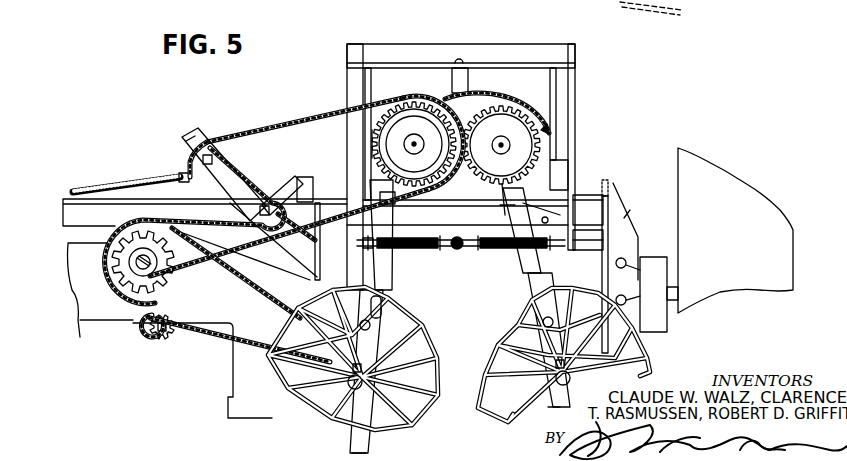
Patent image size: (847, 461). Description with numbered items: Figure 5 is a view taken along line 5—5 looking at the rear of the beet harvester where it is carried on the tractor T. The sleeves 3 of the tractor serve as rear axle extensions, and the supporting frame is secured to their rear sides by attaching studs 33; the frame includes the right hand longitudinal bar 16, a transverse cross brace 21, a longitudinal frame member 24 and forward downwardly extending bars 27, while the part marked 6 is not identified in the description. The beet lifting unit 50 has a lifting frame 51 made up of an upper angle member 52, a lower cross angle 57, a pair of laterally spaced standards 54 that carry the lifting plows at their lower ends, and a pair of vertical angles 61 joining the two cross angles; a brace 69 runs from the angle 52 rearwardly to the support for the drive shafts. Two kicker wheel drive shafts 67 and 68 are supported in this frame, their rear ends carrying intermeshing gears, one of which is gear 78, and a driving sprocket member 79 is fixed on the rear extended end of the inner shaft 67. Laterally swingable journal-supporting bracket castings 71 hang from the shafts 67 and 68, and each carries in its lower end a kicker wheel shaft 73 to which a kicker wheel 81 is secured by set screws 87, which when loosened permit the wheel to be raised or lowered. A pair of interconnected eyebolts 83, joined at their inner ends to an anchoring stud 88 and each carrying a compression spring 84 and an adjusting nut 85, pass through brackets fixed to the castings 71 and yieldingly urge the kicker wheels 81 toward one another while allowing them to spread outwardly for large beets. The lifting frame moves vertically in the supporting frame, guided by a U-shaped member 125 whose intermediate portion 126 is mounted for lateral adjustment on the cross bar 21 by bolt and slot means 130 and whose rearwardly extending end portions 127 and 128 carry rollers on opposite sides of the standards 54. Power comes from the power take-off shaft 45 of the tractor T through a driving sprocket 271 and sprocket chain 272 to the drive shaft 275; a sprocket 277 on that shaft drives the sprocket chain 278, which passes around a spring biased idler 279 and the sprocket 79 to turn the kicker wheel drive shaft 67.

The sleeves 3 is at (90, 300).
The hood panel 5 is at (728, 175).
The frame member 6 is at (563, 140).
The right hand longitudinal bar 16 is at (607, 183).
The cross brace 21 is at (160, 210).
The longitudinal frame member 24 is at (300, 178).
The downwardly extending bars 27 is at (622, 218).
The attaching studs 33 is at (647, 294).
The power take-off shaft 45 is at (313, 357).
The beet lifting unit 50 is at (452, 43).
The lifting frame 51 is at (344, 96).
The upper angle member 52 is at (510, 55).
The standards 54 is at (369, 83).
The lower cross angle 57 is at (588, 245).
The vertical angles 61 is at (352, 80).
The kicker wheel drive shaft 67 is at (413, 142).
The kicker wheel drive shaft 68 is at (498, 142).
The brace 69 is at (452, 83).
The journal-supporting bracket castings 71 is at (390, 197).
The kicker wheel shaft 73 is at (330, 410).
The gear 78 is at (517, 117).
The driving sprocket member 79 is at (378, 142).
The kicker wheel 81 is at (476, 369).
The eyebolts 83 is at (463, 252).
The spring 84 is at (392, 265).
The adjusting nut 85 is at (357, 243).
The set screws 87 is at (363, 320).
The anchoring stud 88 is at (467, 262).
The U-shaped member 125 is at (533, 190).
The intermediate portion 126 is at (502, 193).
The end portion 127 is at (345, 210).
The end portion 128 is at (580, 213).
The bolt and slot means 130 is at (510, 213).
The driving sprocket 271 is at (317, 348).
The sprocket chain 272 is at (205, 343).
The drive shaft 275 is at (138, 268).
The sprocket 277 is at (132, 250).
The sprocket chain 278 is at (247, 130).
The spring biased idler 279 is at (231, 175).
The tractor T is at (231, 368).